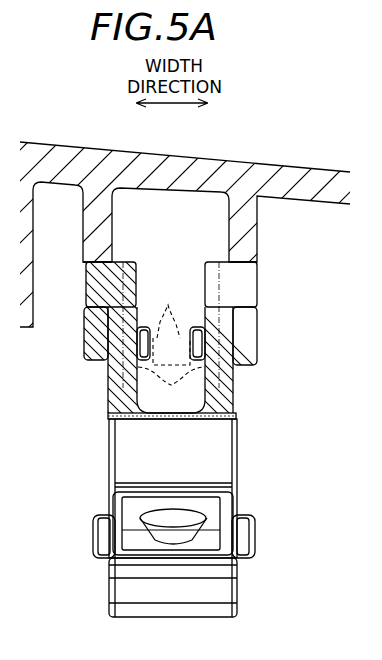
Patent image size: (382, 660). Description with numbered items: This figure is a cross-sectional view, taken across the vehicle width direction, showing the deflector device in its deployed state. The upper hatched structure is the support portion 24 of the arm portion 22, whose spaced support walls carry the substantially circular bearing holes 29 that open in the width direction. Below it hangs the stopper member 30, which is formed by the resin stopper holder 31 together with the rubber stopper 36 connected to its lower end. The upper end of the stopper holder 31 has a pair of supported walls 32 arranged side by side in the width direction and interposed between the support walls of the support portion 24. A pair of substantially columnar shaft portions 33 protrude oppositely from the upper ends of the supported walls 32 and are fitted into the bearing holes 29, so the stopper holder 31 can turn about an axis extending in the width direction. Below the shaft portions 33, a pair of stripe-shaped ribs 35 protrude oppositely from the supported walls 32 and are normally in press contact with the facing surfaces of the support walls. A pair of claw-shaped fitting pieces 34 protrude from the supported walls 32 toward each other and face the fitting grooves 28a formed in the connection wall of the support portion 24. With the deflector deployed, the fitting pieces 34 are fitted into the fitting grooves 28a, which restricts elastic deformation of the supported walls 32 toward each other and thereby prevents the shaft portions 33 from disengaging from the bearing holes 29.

The support portion 24 is at (191, 228).
The arm portion 22 is at (258, 163).
The bearing holes 29 is at (88, 271).
The shaft portions 33 is at (93, 290).
The ribs 35 is at (100, 330).
The supported walls 32 is at (115, 385).
The fitting grooves 28a is at (163, 330).
The fitting pieces 34 is at (171, 389).
The stopper member 30 is at (132, 518).
The stopper holder 31 is at (108, 472).
The stopper 36 is at (111, 585).